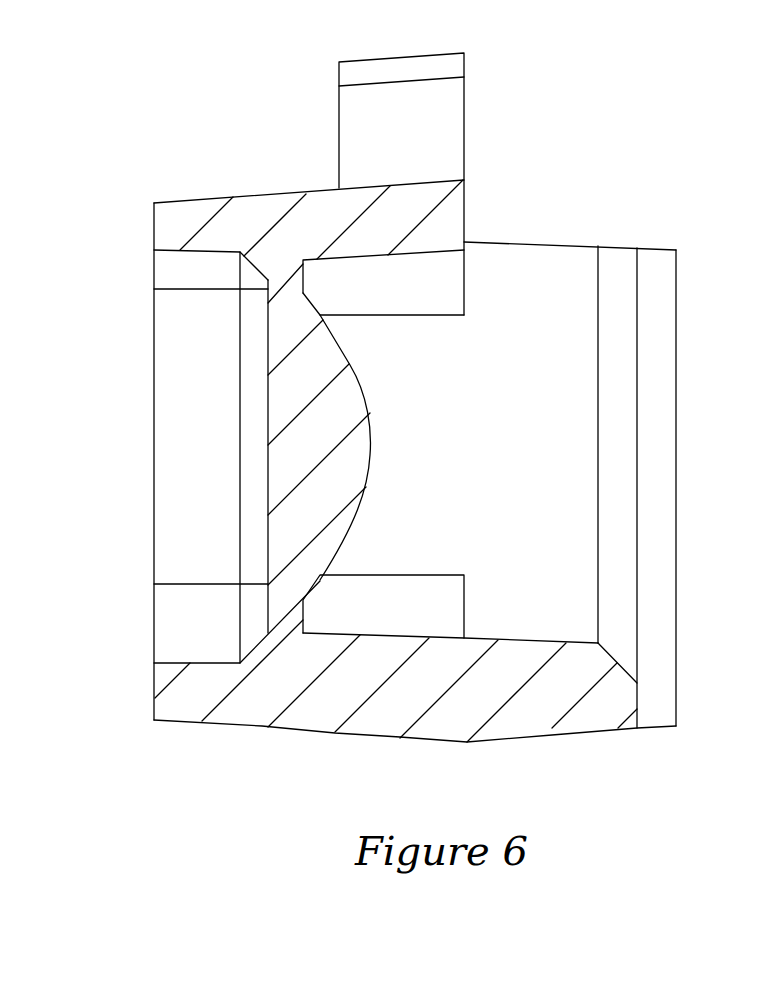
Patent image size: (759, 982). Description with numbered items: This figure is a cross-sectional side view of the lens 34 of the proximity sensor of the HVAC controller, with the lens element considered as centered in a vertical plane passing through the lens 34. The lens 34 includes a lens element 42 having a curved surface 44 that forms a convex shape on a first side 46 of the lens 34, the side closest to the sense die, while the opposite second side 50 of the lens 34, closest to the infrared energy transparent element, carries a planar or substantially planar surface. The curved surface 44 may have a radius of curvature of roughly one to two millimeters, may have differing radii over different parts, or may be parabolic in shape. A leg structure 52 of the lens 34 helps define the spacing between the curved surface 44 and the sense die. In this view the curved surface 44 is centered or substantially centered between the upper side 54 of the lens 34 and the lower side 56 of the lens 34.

The lens 34 is at (189, 128).
The lens element 42 is at (134, 360).
The curved surface 44 is at (368, 390).
The first side 46 is at (445, 460).
The second side 50 is at (267, 503).
The leg structure 52 is at (218, 456).
The upper side 54 is at (455, 217).
The lower side 56 is at (262, 708).